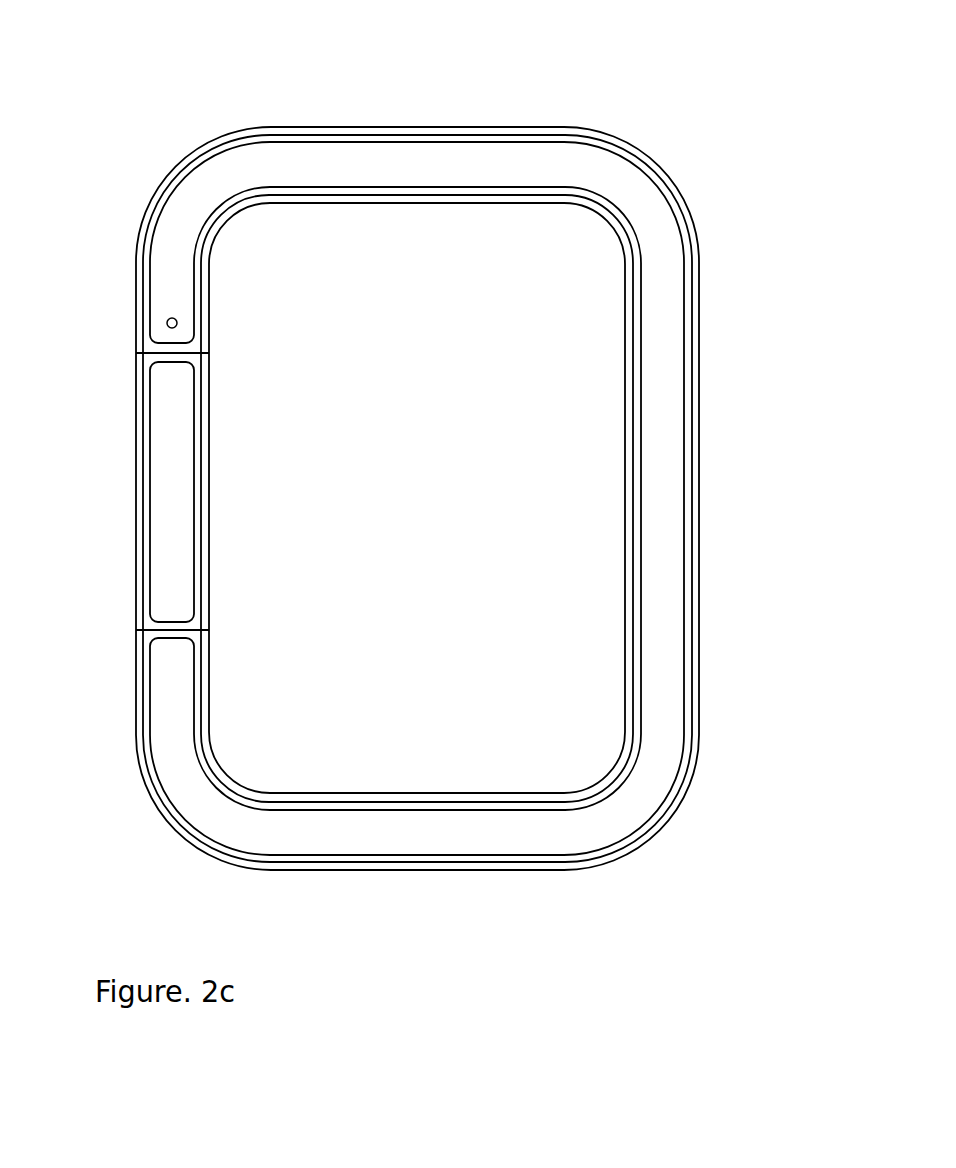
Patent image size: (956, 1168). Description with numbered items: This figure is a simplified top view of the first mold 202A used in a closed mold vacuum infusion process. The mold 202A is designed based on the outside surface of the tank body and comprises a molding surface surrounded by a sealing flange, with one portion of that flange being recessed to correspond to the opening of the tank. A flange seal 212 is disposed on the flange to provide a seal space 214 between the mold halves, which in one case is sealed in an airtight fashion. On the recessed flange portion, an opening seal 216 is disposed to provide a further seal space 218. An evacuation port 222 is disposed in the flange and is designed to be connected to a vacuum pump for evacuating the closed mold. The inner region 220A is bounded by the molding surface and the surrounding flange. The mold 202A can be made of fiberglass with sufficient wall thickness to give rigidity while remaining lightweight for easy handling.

The mold 202A is at (718, 160).
The flange seal 212 is at (323, 185).
The seal space 214 is at (480, 165).
The inner frame 220A is at (422, 528).
The evacuation port 222 is at (168, 318).
The opening seal 216 is at (145, 403).
The seal space 218 is at (162, 550).